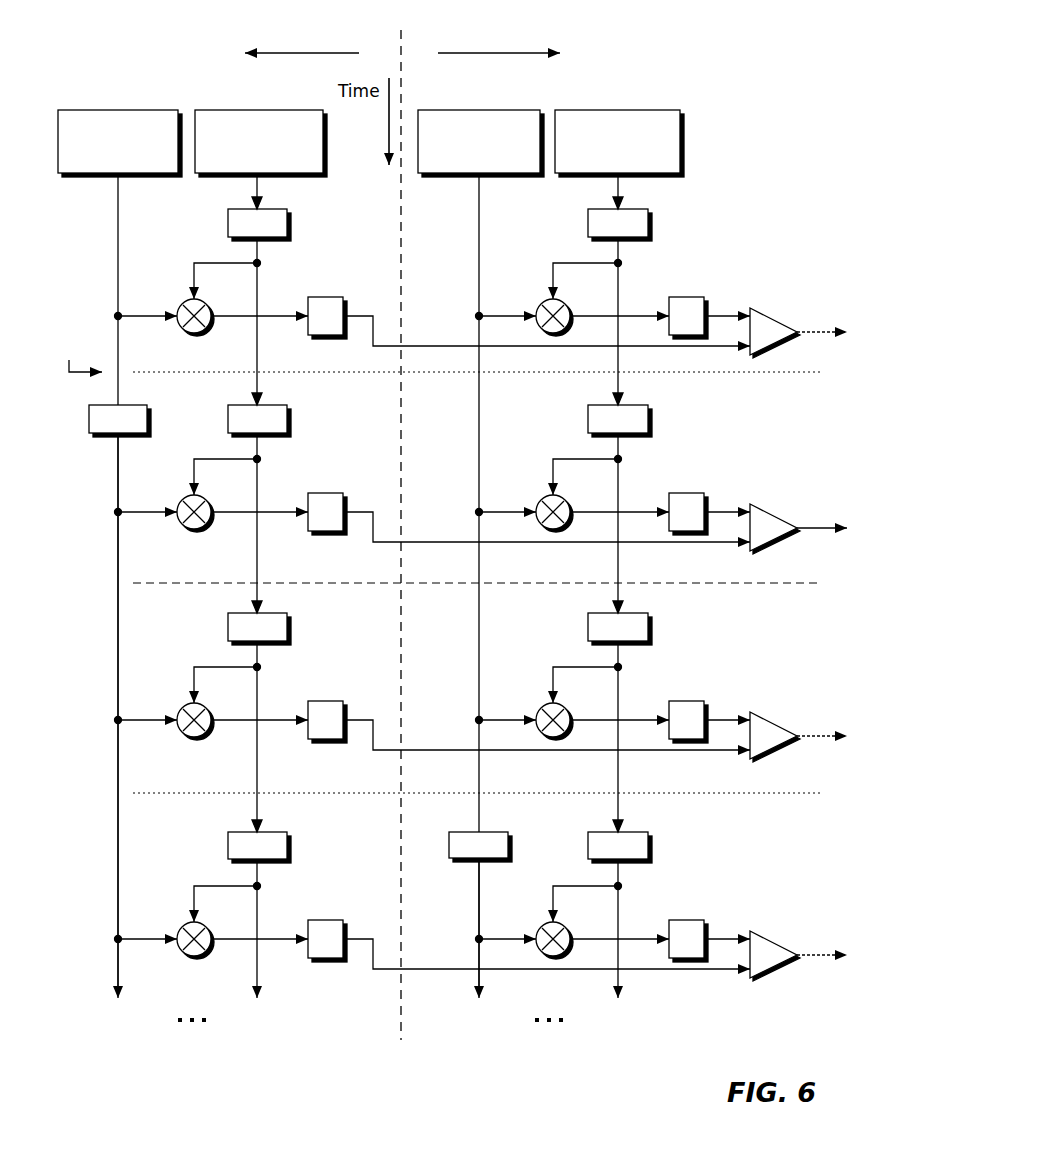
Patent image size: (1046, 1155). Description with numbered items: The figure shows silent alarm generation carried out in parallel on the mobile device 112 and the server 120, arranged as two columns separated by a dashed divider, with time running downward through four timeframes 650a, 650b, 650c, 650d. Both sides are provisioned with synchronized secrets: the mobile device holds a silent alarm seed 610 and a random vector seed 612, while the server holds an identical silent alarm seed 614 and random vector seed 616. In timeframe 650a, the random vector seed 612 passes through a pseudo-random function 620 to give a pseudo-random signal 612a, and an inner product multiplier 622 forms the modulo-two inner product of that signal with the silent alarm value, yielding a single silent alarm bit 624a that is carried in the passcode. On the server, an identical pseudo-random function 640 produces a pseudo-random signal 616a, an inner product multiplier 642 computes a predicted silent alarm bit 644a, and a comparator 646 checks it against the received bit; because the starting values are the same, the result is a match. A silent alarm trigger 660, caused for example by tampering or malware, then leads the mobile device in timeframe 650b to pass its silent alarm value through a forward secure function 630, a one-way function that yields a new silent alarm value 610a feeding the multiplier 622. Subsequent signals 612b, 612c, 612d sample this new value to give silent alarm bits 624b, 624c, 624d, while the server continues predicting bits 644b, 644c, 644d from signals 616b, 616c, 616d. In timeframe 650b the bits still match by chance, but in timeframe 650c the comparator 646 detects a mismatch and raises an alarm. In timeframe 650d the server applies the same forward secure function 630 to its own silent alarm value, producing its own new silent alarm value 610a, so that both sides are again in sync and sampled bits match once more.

The mobile device 112 is at (359, 38).
The server 120 is at (540, 38).
The silent alarm seed 610 is at (91, 110).
The random vector seed 612 is at (229, 110).
The silent alarm seed 614 is at (481, 110).
The random vector seed 616 is at (640, 110).
The pseudo-random function 620 is at (235, 530).
The inner product multiplier 622 is at (204, 300).
The silent alarm bit 624a is at (352, 298).
The silent alarm bit 624b is at (352, 494).
The silent alarm bit 624c is at (352, 702).
The silent alarm bit 624d is at (352, 921).
The forward secure function 630 is at (453, 833).
The pseudo-random function 640 is at (595, 530).
The inner product multiplier 642 is at (564, 300).
The predicted silent alarm bit 644a is at (710, 298).
The predicted silent alarm bit 644b is at (710, 494).
The predicted silent alarm bit 644c is at (710, 702).
The predicted silent alarm bit 644d is at (710, 921).
The comparator 646 is at (774, 315).
The timeframe 650a is at (762, 236).
The timeframe 650b is at (762, 432).
The timeframe 650c is at (762, 628).
The timeframe 650d is at (762, 848).
The pseudo-random signal 612a is at (258, 279).
The pseudo-random signal 612b is at (258, 475).
The pseudo-random signal 612c is at (257, 683).
The pseudo-random signal 612d is at (258, 902).
The pseudo-random signal 616a is at (618, 279).
The pseudo-random signal 616b is at (618, 475).
The pseudo-random signal 616c is at (617, 683).
The pseudo-random signal 616d is at (618, 902).
The silent alarm trigger 660 is at (83, 346).
The new silent alarm value 610a is at (269, 711).